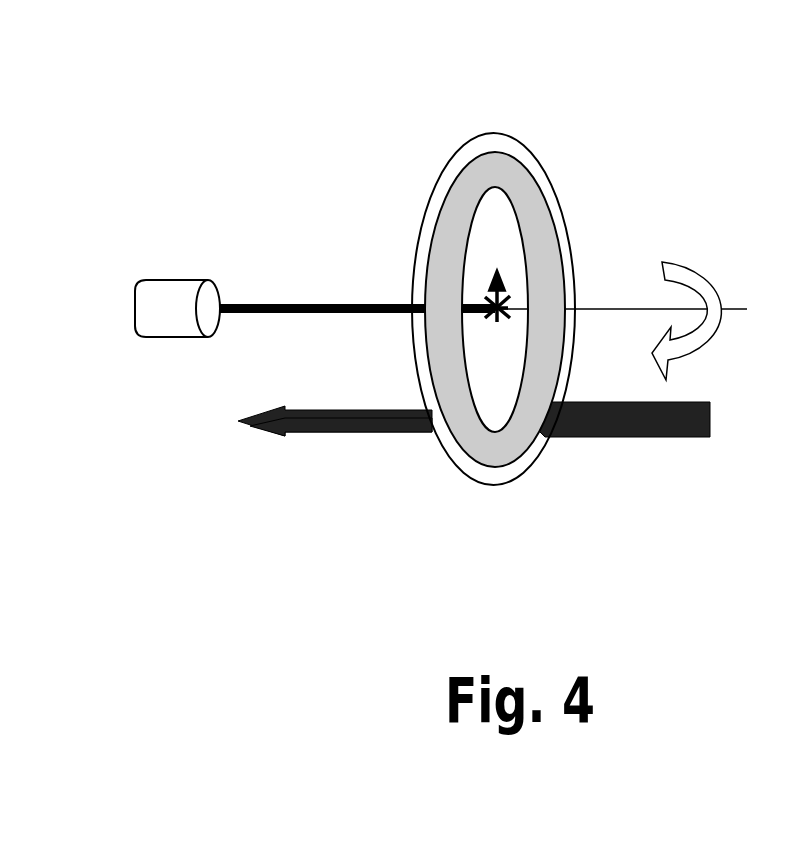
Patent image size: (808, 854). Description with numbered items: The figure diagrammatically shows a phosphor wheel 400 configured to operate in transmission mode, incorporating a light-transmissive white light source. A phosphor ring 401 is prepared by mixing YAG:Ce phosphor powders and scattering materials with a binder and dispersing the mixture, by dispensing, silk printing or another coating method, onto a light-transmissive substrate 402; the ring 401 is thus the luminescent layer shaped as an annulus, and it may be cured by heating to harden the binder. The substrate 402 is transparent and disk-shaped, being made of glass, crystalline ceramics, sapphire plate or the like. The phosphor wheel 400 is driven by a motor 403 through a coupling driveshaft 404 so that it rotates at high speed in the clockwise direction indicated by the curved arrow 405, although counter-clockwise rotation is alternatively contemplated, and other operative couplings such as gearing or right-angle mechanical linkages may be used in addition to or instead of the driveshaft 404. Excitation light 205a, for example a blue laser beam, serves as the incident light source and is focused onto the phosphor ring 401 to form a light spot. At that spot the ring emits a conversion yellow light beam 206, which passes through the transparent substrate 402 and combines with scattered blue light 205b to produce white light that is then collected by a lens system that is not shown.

The phosphor wheel 400 is at (403, 121).
The phosphor ring 401 is at (500, 168).
The light-transmissive substrate 402 is at (425, 212).
The motor 403 is at (176, 292).
The coupling driveshaft 404 is at (315, 313).
The curved arrow 405 is at (716, 258).
The excitation light 205a is at (637, 437).
The scattered blue light 205b is at (303, 420).
The conversion yellow light beam 206 is at (411, 433).